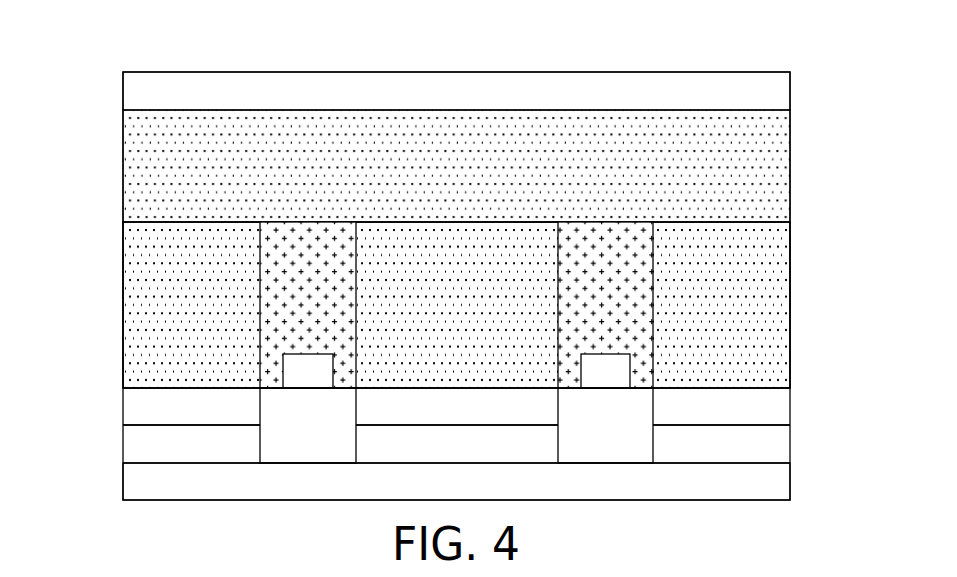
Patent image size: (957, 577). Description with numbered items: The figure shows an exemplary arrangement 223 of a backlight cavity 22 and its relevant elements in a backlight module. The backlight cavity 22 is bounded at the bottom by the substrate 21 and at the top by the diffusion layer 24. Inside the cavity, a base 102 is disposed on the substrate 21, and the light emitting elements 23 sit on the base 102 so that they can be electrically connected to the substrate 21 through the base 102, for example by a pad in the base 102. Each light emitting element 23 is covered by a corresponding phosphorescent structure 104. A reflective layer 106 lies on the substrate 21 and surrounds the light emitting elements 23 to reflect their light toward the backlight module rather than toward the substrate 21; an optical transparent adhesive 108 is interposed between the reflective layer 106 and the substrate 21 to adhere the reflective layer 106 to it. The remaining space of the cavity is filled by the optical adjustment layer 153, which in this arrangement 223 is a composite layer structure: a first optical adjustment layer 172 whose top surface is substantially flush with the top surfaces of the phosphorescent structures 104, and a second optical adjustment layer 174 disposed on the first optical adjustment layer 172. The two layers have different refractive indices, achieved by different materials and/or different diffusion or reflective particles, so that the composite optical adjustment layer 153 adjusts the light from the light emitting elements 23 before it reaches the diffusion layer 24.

The arrangement 223 is at (83, 63).
The diffusion layer 24 is at (776, 95).
The second optical adjustment layer 174 is at (776, 188).
The first optical adjustment layer 172 is at (479, 305).
The optical adjustment layer 153 is at (501, 249).
The backlight cavity 22 is at (120, 277).
The phosphorescent structure 104 is at (275, 323).
The light emitting element 23 is at (617, 373).
The reflective layer 106 is at (776, 412).
The optical transparent adhesive 108 is at (776, 449).
The substrate 21 is at (776, 487).
The base 102 is at (281, 449).